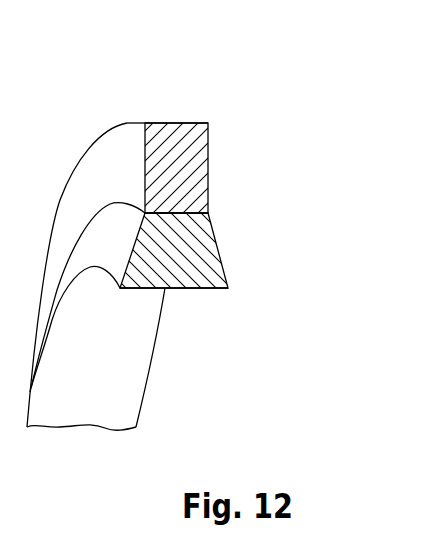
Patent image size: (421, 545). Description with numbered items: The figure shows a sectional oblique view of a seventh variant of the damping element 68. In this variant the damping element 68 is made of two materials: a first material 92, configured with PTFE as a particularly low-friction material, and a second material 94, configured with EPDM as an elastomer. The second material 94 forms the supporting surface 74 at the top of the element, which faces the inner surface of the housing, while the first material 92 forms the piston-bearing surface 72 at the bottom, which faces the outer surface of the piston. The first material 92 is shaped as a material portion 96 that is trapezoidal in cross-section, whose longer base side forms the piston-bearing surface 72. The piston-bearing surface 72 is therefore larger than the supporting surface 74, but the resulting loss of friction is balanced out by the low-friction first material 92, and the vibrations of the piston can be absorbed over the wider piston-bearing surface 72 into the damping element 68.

The damping element 68 is at (111, 105).
The supporting surface 74 is at (167, 122).
The second material 94 is at (197, 151).
The first material 92 is at (200, 238).
The material portion 96 is at (172, 288).
The piston-bearing surface 72 is at (218, 290).